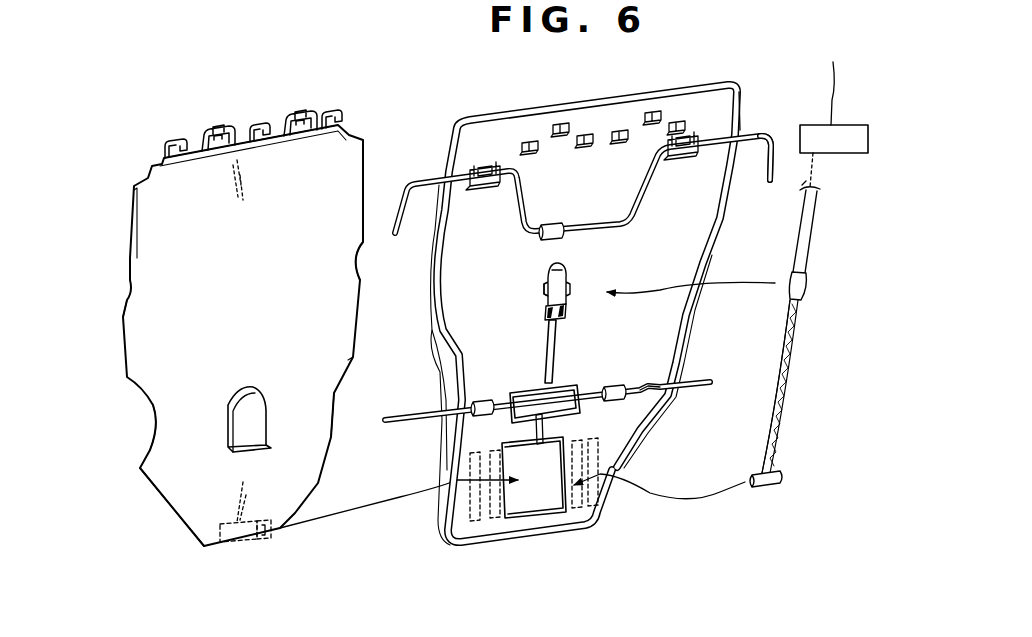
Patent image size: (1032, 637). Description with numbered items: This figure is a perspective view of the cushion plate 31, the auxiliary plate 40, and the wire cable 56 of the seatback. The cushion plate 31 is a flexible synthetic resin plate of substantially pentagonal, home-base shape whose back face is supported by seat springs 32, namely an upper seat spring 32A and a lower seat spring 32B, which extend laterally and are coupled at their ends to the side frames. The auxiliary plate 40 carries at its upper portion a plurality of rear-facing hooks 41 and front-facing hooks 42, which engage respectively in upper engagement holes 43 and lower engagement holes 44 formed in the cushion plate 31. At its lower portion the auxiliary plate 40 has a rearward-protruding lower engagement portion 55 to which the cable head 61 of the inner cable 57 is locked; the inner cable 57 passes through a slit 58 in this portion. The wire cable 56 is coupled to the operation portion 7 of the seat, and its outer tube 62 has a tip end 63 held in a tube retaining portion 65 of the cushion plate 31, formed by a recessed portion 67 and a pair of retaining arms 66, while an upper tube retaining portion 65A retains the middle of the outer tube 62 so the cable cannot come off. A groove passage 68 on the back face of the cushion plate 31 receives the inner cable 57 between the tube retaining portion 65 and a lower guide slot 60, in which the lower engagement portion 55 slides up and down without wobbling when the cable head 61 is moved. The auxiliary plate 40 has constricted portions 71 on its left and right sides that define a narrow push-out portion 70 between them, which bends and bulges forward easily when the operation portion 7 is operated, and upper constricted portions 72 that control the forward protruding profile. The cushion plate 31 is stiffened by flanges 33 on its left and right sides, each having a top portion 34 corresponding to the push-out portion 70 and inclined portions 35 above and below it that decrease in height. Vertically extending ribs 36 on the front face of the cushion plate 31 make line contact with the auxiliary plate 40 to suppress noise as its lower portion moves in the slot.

The operation portion 7 is at (840, 125).
The cushion plate 31 is at (490, 113).
The seat springs 32 is at (432, 180).
The upper seat spring 32A is at (762, 133).
The lower seat spring 32B is at (703, 378).
The flanges 33 is at (468, 305).
The top portion 34 is at (440, 420).
The inclined portions 35 is at (441, 356).
The ribs 36 is at (472, 505).
The auxiliary plate 40 is at (128, 238).
The rear-facing hooks 41 is at (216, 126).
The front-facing hooks 42 is at (176, 140).
The upper engagement holes 43 is at (562, 123).
The lower engagement holes 44 is at (530, 155).
The lower engagement portion 55 is at (228, 544).
The wire cable 56 is at (782, 364).
The inner cable 57 is at (782, 416).
The slit 58 is at (258, 544).
The lower guide slot 60 is at (548, 452).
The cable head 61 is at (782, 482).
The outer tube 62 is at (808, 220).
The tip end 63 is at (806, 282).
The tube retaining portion 65 is at (558, 326).
The upper tube retaining portion 65A is at (543, 283).
The retaining arms 66 is at (545, 313).
The recessed portion 67 is at (563, 266).
The groove passage 68 is at (524, 428).
The push-out portion 70 is at (197, 422).
The constricted portions 71 is at (150, 414).
The upper constricted portions 72 is at (125, 296).